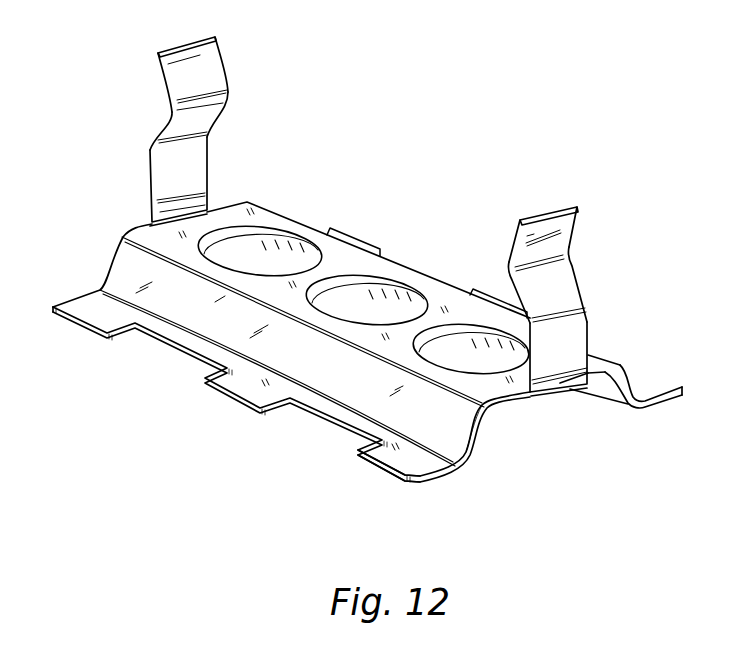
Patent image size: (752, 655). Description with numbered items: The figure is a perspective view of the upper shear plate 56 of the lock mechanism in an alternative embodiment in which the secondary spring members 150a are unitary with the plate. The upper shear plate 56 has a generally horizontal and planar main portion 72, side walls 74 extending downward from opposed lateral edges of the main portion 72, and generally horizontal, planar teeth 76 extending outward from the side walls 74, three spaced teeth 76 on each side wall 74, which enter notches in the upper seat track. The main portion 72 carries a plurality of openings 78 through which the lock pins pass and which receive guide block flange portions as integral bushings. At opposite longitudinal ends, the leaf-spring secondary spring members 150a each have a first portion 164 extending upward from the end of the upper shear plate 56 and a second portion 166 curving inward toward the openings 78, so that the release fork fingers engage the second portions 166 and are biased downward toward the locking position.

The upper shear plate 56 is at (129, 432).
The main portion 72 is at (507, 400).
The side walls 74 is at (478, 440).
The teeth 76 is at (382, 470).
The openings 78 is at (360, 322).
The secondary spring members 150a is at (146, 207).
The first portion 164 is at (148, 172).
The second portion 166 is at (163, 82).